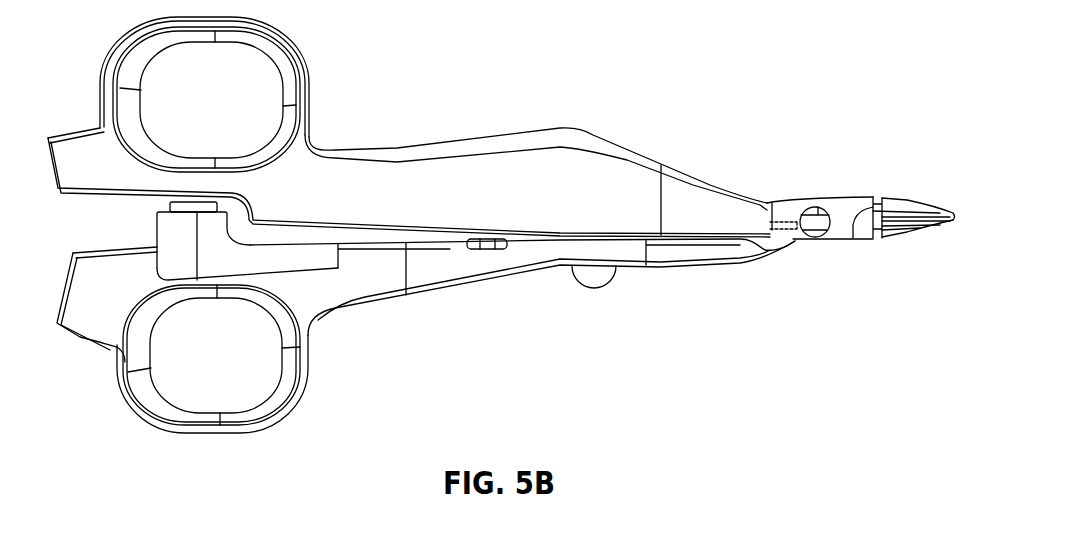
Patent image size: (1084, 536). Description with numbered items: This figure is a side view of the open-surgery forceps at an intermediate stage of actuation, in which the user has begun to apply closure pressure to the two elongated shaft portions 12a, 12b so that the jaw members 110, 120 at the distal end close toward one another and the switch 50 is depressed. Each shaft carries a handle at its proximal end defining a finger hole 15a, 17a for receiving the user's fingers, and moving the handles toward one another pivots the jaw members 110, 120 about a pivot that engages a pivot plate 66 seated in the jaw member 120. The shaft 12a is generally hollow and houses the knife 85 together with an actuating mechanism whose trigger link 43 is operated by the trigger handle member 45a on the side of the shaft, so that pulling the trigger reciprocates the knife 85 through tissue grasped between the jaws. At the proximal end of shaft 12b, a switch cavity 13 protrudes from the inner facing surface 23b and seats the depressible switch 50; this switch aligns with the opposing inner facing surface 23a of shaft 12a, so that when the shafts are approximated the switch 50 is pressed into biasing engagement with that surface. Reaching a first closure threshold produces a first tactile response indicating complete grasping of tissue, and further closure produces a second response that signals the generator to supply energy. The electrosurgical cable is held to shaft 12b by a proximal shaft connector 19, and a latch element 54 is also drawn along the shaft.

The elongated shaft portion 12a is at (464, 143).
The elongated shaft portion 12b is at (415, 280).
The switch cavity 13 is at (177, 240).
The finger hole 15a is at (241, 397).
The finger hole 17a is at (236, 117).
The proximal shaft connector 19 is at (97, 313).
The inner facing surface 23a is at (170, 205).
The inner facing surface 23b is at (270, 248).
The trigger link 43 is at (785, 254).
The handle member 45a is at (598, 284).
The depressible switch 50 is at (170, 207).
The latch 54 is at (483, 249).
The pivot plate 66 is at (818, 210).
The knife 85 is at (790, 222).
The jaw member 110 is at (910, 198).
The jaw member 120 is at (913, 232).